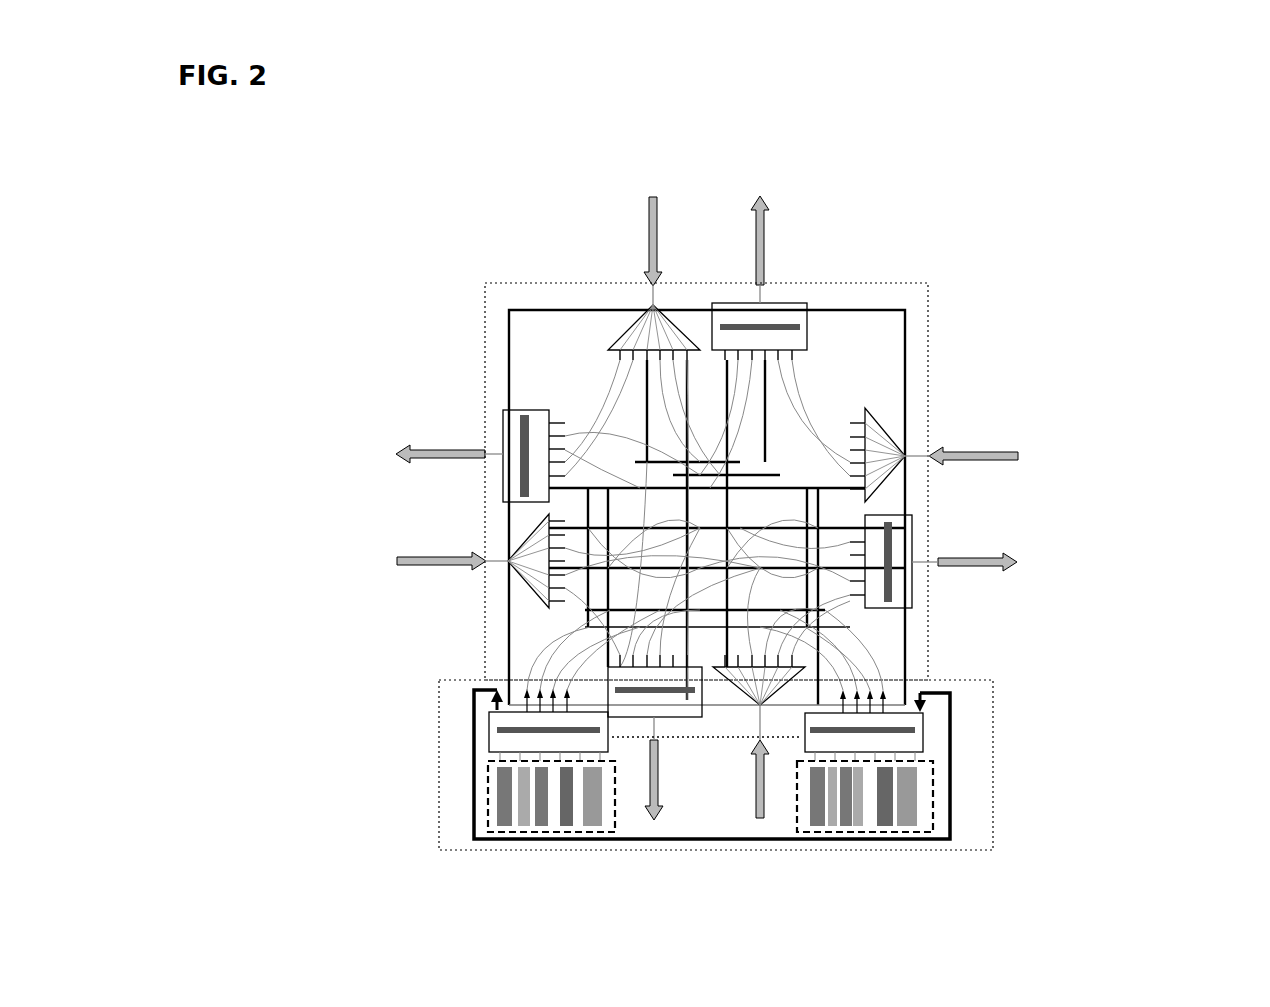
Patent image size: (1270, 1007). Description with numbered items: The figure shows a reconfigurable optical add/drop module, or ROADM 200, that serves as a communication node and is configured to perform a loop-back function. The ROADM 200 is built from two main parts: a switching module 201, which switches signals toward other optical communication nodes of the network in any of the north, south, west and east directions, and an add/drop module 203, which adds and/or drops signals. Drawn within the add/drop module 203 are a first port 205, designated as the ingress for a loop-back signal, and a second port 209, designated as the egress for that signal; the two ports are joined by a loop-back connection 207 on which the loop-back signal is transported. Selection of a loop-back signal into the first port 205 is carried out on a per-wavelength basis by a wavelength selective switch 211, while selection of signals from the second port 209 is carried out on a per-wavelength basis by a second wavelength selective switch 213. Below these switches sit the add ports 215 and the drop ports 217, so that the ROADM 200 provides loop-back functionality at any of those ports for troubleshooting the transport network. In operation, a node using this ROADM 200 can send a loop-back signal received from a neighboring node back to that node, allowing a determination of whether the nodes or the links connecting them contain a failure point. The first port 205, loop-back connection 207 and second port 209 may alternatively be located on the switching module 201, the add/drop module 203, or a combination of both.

The ROADM 200 is at (391, 212).
The switching module 201 is at (482, 426).
The add/drop module 203 is at (433, 766).
The first port 205 is at (496, 678).
The loop-back connection 207 is at (701, 842).
The second port 209 is at (924, 688).
The wavelength selective switch 211 is at (486, 724).
The wavelength selective switch 213 is at (937, 731).
The add ports 215 is at (559, 842).
The drop ports 217 is at (868, 842).